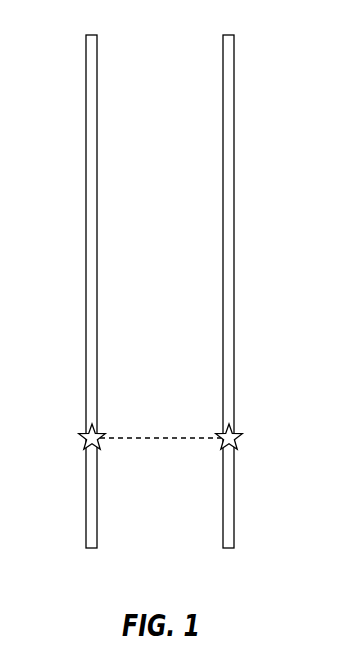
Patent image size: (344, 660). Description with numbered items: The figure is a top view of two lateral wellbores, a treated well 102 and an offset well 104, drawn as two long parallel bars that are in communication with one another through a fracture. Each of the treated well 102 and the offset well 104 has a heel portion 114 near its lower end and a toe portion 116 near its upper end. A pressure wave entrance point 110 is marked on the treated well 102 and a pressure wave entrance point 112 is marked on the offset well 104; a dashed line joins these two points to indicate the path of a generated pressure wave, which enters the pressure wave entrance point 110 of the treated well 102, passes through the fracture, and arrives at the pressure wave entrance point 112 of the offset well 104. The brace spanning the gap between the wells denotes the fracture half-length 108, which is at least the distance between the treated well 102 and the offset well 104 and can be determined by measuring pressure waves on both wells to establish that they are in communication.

The treated well 102 is at (229, 549).
The offset well 104 is at (92, 549).
The fracture half-length 108 is at (222, 452).
The pressure wave entrance point 110 is at (235, 431).
The pressure wave entrance point 112 is at (86, 431).
The heel portion 114 is at (97, 517).
The toe portion 116 is at (97, 58).